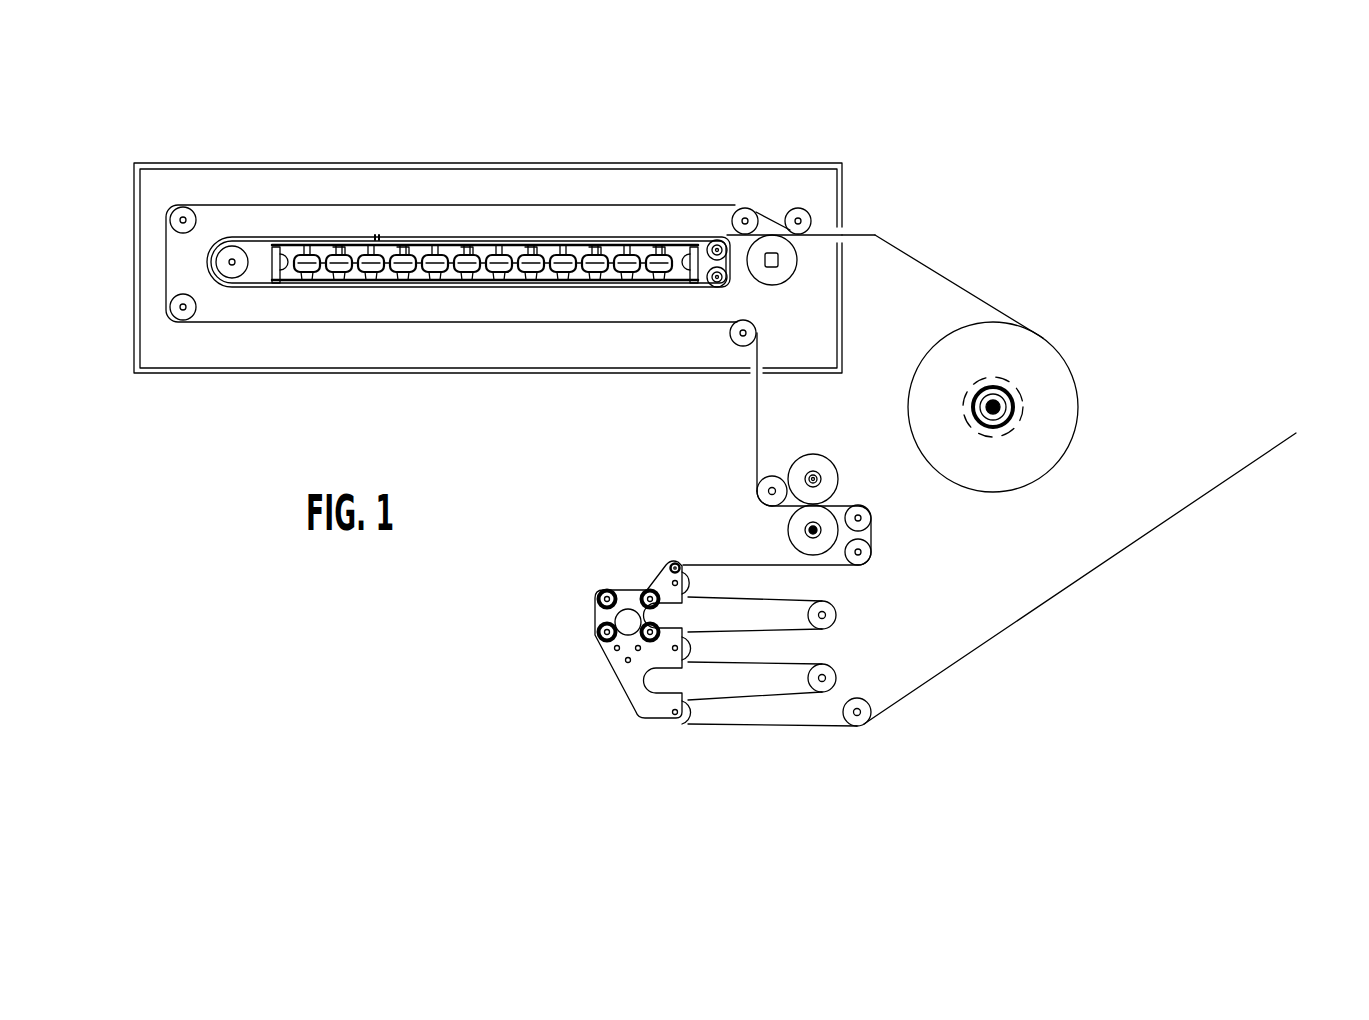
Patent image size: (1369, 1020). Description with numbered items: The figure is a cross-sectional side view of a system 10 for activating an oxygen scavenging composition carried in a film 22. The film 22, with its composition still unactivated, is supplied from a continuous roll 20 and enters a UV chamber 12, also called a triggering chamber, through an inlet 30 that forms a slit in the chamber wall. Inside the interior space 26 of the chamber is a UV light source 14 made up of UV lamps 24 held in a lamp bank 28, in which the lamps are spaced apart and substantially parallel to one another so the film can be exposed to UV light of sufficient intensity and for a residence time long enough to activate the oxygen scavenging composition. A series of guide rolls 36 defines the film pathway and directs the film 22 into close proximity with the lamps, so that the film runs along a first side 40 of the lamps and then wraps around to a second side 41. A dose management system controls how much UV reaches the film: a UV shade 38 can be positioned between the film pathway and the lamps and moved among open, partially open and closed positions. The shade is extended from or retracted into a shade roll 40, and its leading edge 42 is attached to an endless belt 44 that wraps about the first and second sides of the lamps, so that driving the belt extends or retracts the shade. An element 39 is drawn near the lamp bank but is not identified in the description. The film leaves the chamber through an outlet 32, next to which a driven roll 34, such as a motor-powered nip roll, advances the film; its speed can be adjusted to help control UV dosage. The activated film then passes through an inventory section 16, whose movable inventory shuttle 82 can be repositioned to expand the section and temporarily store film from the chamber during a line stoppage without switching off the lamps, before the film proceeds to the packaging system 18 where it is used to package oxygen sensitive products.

The system for activating an oxygen scavenging composition 10 is at (596, 254).
The UV chamber 12 is at (377, 165).
The UV light source 14 is at (556, 213).
The inventory section 16 is at (712, 707).
The packaging system 18 is at (1232, 330).
The continuous roll 20 is at (1043, 338).
The film 22 is at (907, 252).
The UV lamps 24 is at (372, 266).
The interior space 26 is at (552, 350).
The lamp bank 28 is at (292, 248).
The inlet 30 is at (861, 216).
The outlet 32 is at (751, 383).
The driven roll 34 is at (848, 484).
The guide rolls 36 is at (181, 208).
The UV shade 38 is at (735, 212).
The holder cap 39 is at (337, 250).
The shade roll 40 is at (782, 270).
The second side 41 is at (325, 281).
The leading edge 42 is at (400, 234).
The endless belt 44 is at (265, 286).
The inventory shuttle 82 is at (623, 673).